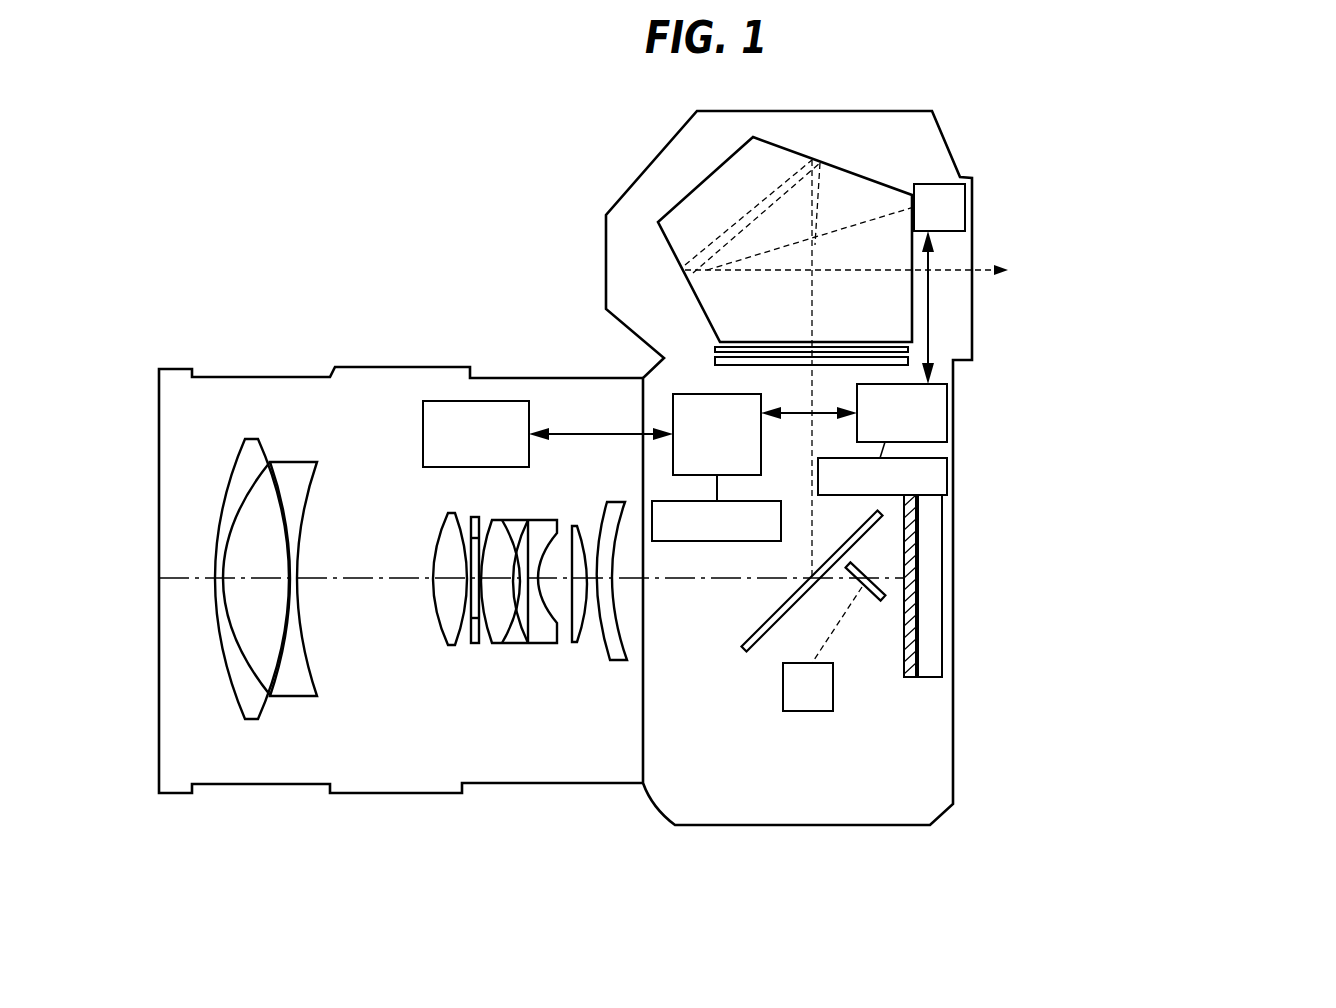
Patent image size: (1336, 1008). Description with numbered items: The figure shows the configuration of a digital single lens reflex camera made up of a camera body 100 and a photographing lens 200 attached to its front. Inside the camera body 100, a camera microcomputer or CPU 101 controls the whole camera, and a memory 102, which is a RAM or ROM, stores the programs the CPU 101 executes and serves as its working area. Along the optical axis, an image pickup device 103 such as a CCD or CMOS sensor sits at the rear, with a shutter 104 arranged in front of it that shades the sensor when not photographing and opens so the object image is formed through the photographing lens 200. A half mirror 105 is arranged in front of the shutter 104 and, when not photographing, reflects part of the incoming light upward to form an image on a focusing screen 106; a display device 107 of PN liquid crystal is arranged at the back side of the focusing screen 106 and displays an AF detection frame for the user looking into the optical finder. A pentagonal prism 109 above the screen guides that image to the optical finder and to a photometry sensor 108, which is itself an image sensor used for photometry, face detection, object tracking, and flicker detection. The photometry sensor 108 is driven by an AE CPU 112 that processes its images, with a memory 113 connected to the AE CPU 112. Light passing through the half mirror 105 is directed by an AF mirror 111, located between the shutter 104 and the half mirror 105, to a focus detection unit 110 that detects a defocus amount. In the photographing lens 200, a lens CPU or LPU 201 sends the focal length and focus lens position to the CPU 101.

The camera body 100 is at (946, 770).
The camera microcomputer (CPU) 101 is at (690, 394).
The memory 102 is at (695, 541).
The image pickup device 103 is at (932, 637).
The shutter 104 is at (915, 547).
The half mirror 105 is at (762, 646).
The focusing screen 106 is at (908, 362).
The display device 107 is at (908, 350).
The photometry (AE) sensor 108 is at (965, 208).
The pentagonal prism 109 is at (678, 217).
The focus detection unit 110 is at (833, 686).
The AF mirror 111 is at (887, 588).
The AE CPU 112 is at (947, 412).
The memory 113 is at (947, 477).
The photographing lens unit 200 is at (185, 432).
The lens CPU (LPU) 201 is at (453, 400).